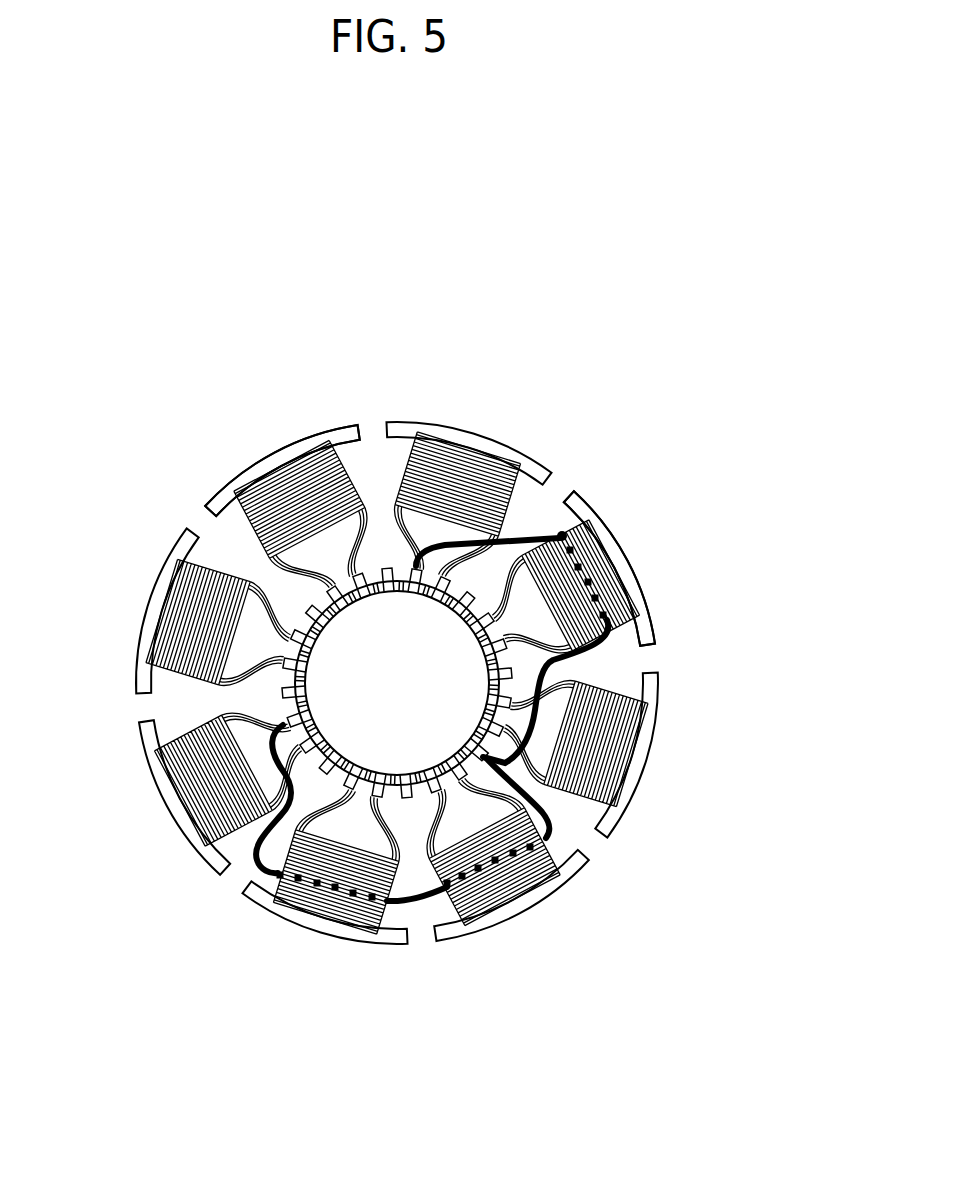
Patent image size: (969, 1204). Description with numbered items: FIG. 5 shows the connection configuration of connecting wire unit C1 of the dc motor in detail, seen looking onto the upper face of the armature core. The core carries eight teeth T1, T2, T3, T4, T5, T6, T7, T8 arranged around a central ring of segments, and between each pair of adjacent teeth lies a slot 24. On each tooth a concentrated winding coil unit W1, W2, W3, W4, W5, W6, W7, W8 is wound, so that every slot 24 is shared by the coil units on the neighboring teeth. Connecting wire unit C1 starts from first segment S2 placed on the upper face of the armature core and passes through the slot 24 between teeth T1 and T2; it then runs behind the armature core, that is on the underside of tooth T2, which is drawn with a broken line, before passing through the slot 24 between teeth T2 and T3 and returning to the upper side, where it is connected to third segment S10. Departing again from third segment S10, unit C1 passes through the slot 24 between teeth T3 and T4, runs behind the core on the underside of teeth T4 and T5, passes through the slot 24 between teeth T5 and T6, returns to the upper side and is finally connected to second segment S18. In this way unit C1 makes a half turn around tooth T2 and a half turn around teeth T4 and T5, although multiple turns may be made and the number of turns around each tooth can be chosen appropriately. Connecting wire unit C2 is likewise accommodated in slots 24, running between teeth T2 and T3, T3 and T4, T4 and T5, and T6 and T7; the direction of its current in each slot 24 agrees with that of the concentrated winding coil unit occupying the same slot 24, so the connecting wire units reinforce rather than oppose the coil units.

The tooth T1 is at (432, 430).
The tooth T2 is at (625, 556).
The tooth T3 is at (655, 760).
The tooth T4 is at (518, 913).
The tooth T5 is at (332, 925).
The tooth T6 is at (183, 822).
The tooth T7 is at (150, 605).
The tooth T8 is at (285, 458).
The winding W1 is at (452, 468).
The winding W2 is at (625, 607).
The winding W3 is at (600, 790).
The winding W4 is at (473, 887).
The winding W5 is at (290, 880).
The winding W6 is at (187, 773).
The winding W7 is at (212, 588).
The winding W8 is at (316, 478).
The first segment S2 is at (412, 587).
The third segment S10 is at (463, 745).
The second segment S18 is at (300, 718).
The connecting wire unit C1 is at (535, 535).
The connecting wire unit C2 is at (555, 838).
The slot 24 is at (612, 658).